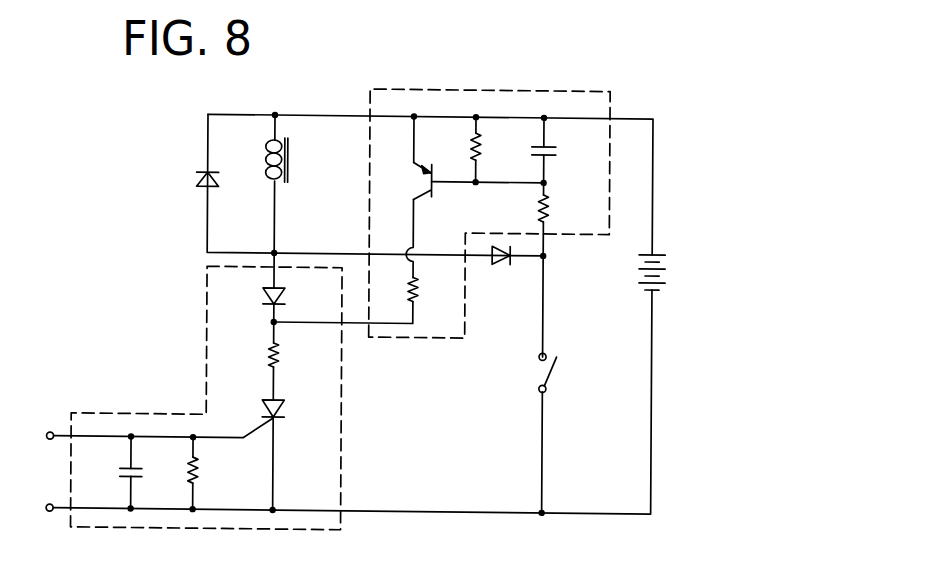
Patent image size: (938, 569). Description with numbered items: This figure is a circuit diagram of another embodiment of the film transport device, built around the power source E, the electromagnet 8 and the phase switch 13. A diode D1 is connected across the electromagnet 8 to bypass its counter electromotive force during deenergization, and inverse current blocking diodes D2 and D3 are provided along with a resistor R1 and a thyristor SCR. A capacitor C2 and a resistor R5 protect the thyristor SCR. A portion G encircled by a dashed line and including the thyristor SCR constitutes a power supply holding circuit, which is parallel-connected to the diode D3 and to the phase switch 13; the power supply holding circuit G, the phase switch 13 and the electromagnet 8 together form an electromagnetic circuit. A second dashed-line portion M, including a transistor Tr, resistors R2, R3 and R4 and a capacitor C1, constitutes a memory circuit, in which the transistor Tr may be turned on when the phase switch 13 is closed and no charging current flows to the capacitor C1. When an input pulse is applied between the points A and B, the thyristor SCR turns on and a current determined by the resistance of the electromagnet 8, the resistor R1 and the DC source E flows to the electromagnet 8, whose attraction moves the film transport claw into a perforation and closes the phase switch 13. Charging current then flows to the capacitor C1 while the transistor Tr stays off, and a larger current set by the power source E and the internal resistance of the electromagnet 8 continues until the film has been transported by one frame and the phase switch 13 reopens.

The diode D1 is at (196, 181).
The electromagnet 8 is at (290, 152).
The memory circuit M is at (524, 86).
The transistor Tr is at (423, 171).
The resistor R3 is at (483, 138).
The capacitor C1 is at (558, 148).
The resistor R2 is at (537, 206).
The inverse current blocking diode D3 is at (500, 261).
The resistor R4 is at (419, 279).
The phase switch 13 is at (540, 375).
The power source E is at (637, 268).
The power supply holding circuit G is at (345, 449).
The inverse current blocking diode D2 is at (287, 296).
The resistor R1 is at (283, 352).
The thyristor SCR is at (287, 407).
The input point A is at (39, 437).
The input point B is at (39, 508).
The capacitor C2 is at (122, 470).
The resistor R5 is at (200, 467).